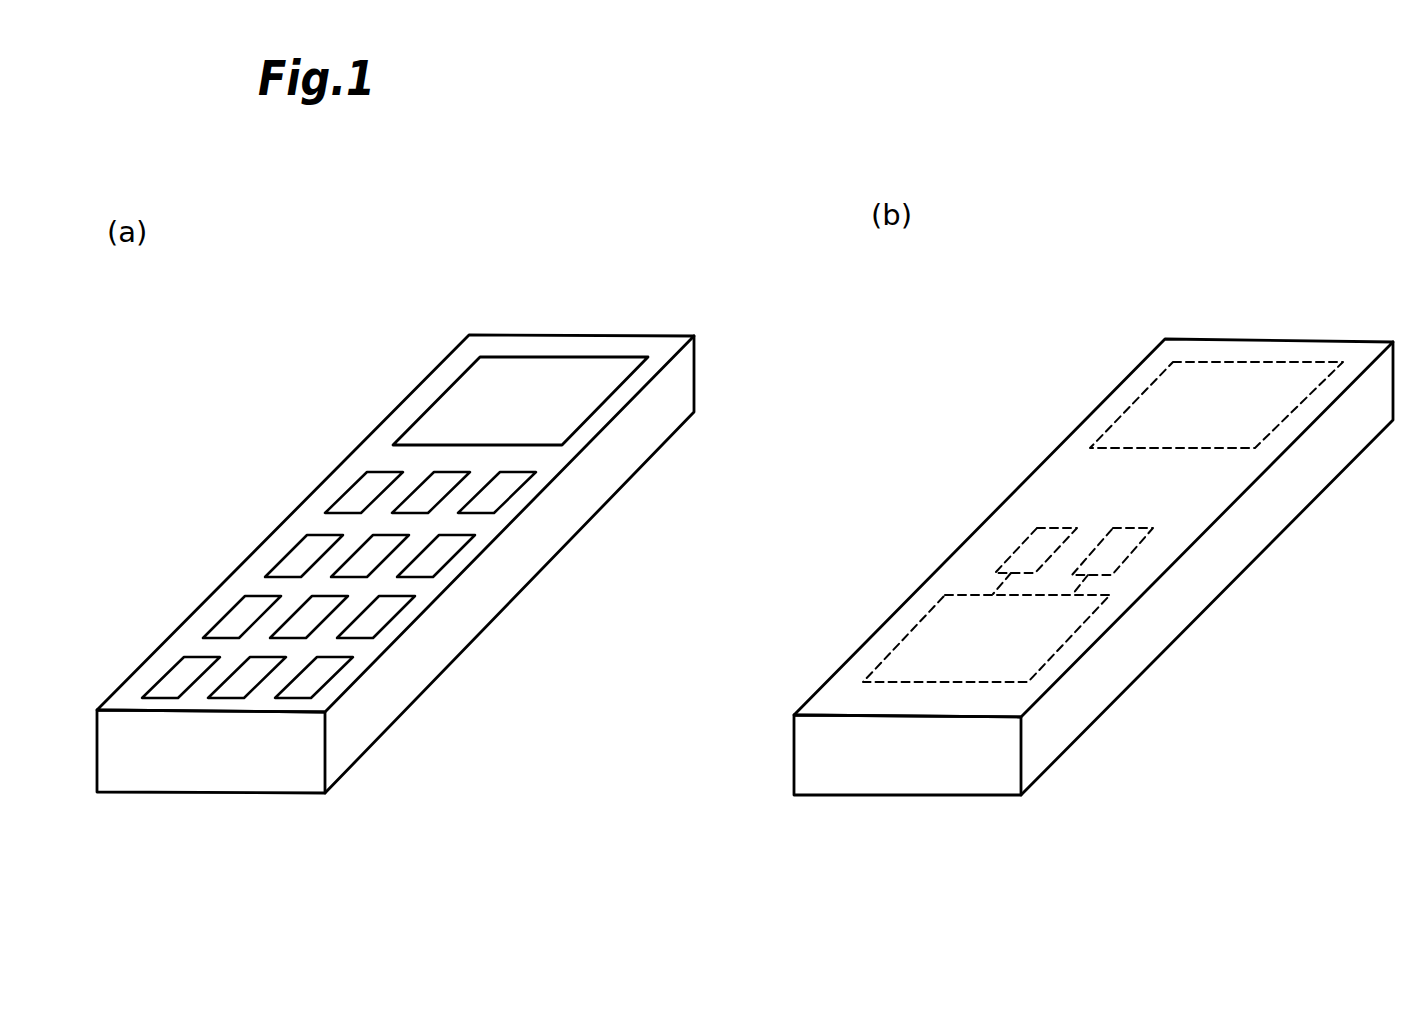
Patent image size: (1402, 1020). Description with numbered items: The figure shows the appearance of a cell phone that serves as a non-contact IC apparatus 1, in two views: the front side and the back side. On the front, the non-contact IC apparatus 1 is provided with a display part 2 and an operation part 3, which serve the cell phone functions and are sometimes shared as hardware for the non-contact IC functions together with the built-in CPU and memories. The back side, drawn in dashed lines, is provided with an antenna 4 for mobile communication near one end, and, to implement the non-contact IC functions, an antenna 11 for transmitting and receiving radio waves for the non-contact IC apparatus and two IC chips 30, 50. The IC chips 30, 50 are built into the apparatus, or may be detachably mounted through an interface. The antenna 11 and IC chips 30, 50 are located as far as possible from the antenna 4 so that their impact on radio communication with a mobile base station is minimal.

The non-contact IC apparatus 1 is at (434, 297).
The display part 2 is at (567, 371).
The operation part 3 is at (302, 557).
The antenna for mobile communication 4 is at (1260, 362).
The antenna for non-contact IC apparatus 11 is at (915, 628).
The IC chip 30 is at (1032, 554).
The IC chip 50 is at (1123, 551).